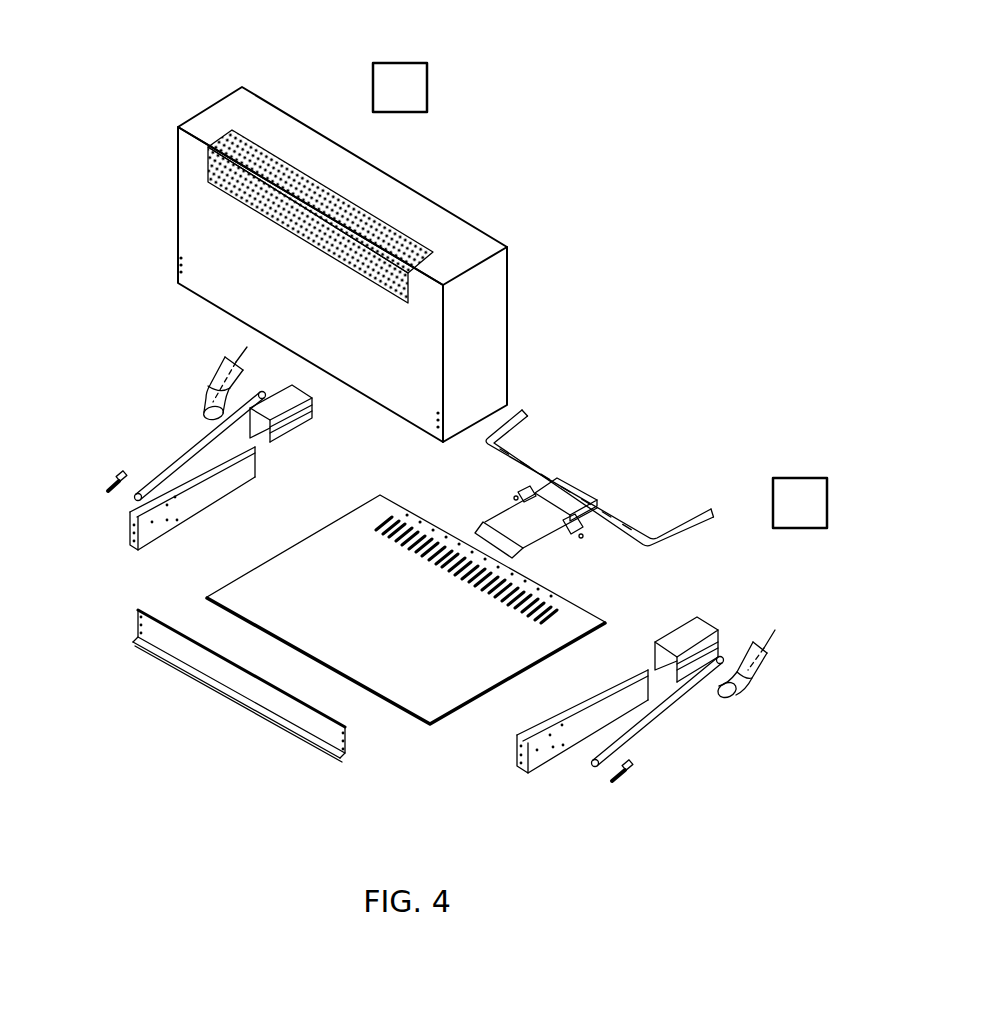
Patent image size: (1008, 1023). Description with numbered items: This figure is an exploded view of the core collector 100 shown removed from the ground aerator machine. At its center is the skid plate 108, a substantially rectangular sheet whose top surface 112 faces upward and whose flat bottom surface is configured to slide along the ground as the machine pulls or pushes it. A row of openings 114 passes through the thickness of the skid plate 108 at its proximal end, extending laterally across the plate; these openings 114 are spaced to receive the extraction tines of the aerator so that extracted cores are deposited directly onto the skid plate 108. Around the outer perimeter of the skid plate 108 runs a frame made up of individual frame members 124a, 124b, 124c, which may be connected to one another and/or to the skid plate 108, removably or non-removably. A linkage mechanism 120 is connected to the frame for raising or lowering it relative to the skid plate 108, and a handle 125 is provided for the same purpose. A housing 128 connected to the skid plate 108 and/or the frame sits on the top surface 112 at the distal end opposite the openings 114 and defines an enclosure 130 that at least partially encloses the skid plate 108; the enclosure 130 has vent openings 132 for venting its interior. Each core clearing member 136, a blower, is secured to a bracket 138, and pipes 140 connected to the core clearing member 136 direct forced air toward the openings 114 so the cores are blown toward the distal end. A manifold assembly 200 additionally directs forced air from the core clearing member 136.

The core collector 100 is at (663, 180).
The skid plate 108 is at (472, 716).
The top surface 112 is at (375, 636).
The openings 114 is at (564, 628).
The linkage mechanism 120 is at (192, 453).
The frame member 124a is at (212, 492).
The frame member 124b is at (220, 670).
The frame member 124c is at (557, 759).
The handle 125 is at (104, 479).
The housing 128 is at (426, 215).
The enclosure 130 is at (331, 321).
The vent openings 132 is at (208, 162).
The core clearing member 136 is at (420, 98).
The bracket 138 is at (305, 414).
The pipe 140 is at (218, 371).
The manifold assembly 200 is at (575, 503).